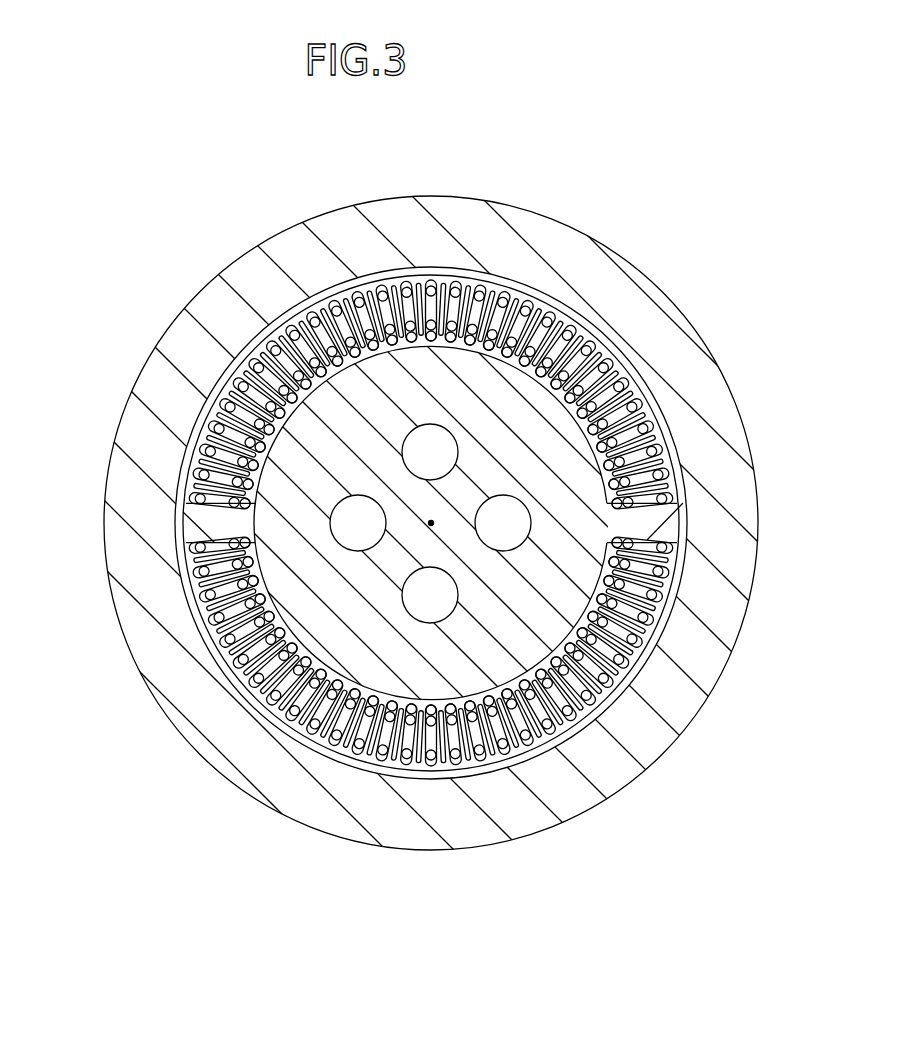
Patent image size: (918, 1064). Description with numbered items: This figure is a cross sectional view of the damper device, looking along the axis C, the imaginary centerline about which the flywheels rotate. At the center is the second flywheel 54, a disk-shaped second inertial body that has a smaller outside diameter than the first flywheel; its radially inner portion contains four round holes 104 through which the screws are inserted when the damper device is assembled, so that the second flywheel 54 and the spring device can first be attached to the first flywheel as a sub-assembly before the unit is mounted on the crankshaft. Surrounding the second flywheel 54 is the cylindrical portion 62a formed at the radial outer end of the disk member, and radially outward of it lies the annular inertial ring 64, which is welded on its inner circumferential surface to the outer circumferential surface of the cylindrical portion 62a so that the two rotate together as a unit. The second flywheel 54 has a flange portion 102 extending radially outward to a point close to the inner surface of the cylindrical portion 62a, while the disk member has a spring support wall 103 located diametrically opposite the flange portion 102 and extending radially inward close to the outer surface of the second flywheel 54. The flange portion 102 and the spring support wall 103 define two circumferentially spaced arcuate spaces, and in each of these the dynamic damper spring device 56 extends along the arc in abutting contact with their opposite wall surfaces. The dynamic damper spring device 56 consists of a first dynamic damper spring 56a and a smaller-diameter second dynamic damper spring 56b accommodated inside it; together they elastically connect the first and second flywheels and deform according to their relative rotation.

The second flywheel 54 is at (360, 625).
The dynamic damper spring device 56 is at (431, 492).
The first dynamic damper spring 56a is at (432, 290).
The second dynamic damper spring 56b is at (467, 283).
The cylindrical portion 62a is at (333, 290).
The inertial ring 64 is at (566, 256).
The flange portion 102 is at (213, 510).
The spring support wall 103 is at (647, 522).
The round holes 104 is at (417, 614).
The axis C is at (433, 521).